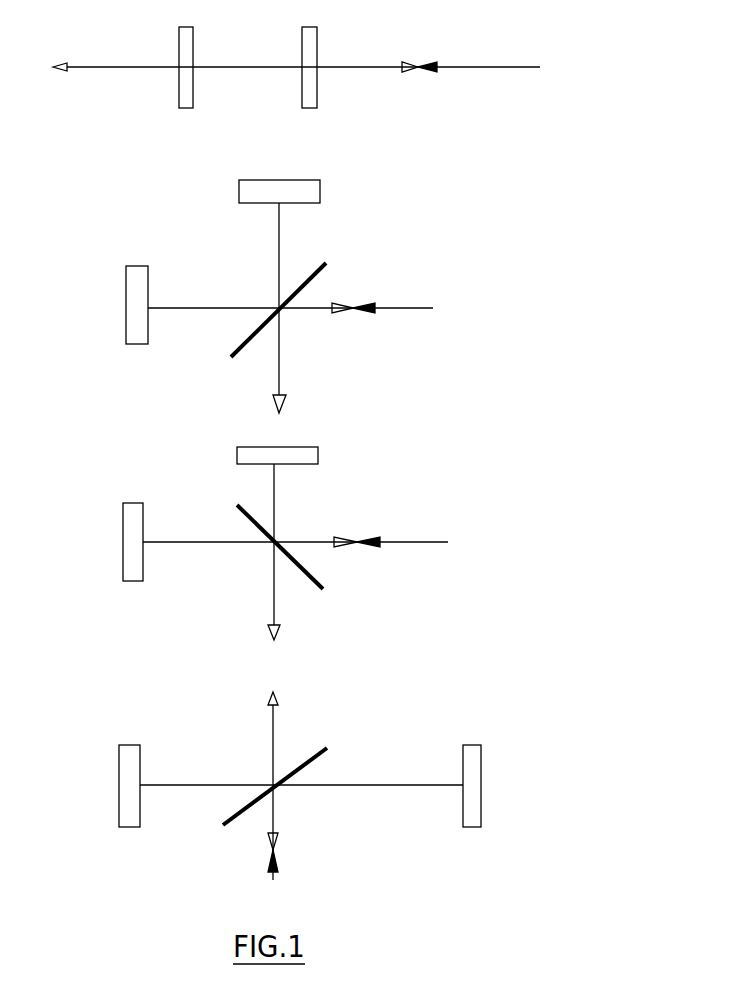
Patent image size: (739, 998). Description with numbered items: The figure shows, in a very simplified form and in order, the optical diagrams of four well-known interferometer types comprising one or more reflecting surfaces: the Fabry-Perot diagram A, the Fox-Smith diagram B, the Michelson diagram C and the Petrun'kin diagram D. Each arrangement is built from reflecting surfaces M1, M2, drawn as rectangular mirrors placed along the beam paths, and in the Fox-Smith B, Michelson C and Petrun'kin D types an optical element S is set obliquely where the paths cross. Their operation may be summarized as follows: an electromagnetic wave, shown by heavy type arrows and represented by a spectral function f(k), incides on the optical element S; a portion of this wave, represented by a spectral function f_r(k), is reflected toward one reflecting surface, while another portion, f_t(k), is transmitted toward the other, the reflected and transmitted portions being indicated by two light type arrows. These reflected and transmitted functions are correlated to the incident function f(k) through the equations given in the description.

The reflecting surface M1 is at (145, 442).
The reflecting surface M2 is at (360, 442).
The optical element S is at (279, 537).
The Fabry-Perot interferometer optical diagram A is at (376, 93).
The Fox-Smith interferometer optical diagram B is at (391, 333).
The Michelson interferometer optical diagram C is at (366, 574).
The Petrun'kin interferometer optical diagram D is at (361, 839).